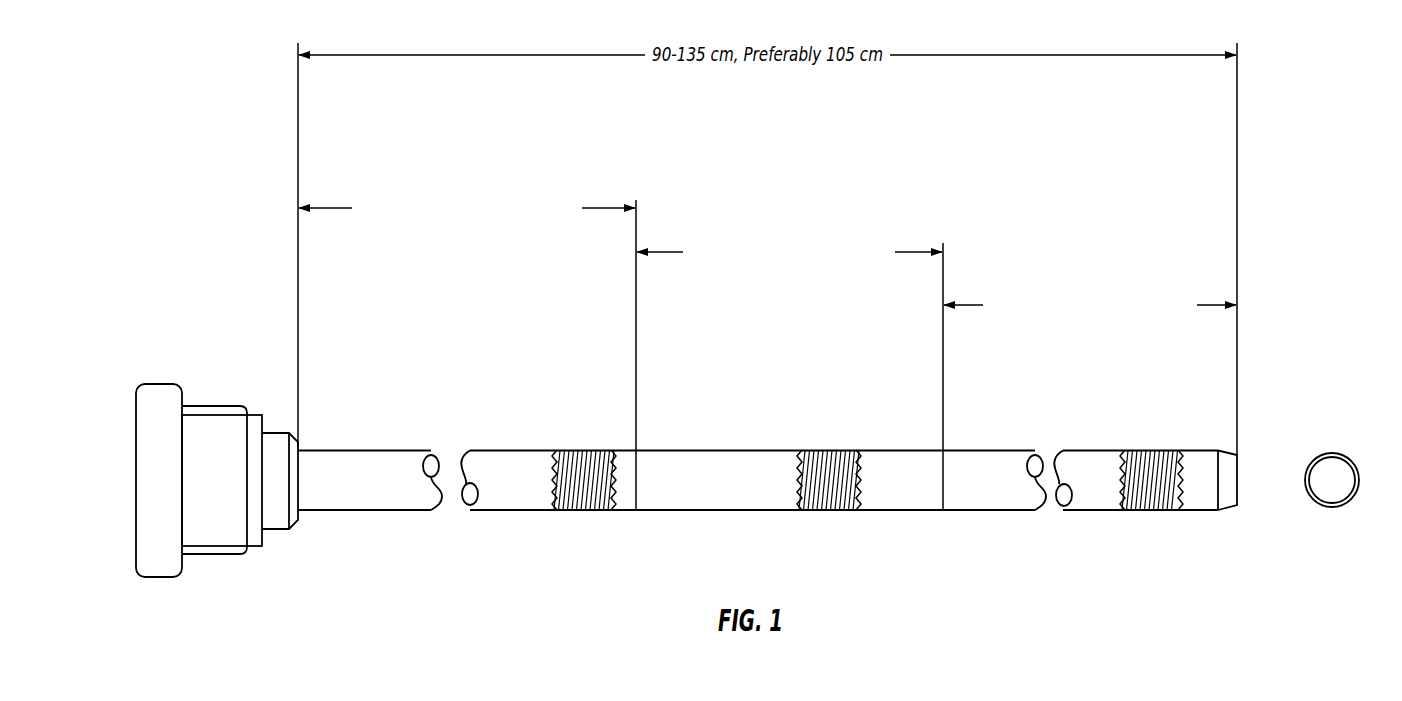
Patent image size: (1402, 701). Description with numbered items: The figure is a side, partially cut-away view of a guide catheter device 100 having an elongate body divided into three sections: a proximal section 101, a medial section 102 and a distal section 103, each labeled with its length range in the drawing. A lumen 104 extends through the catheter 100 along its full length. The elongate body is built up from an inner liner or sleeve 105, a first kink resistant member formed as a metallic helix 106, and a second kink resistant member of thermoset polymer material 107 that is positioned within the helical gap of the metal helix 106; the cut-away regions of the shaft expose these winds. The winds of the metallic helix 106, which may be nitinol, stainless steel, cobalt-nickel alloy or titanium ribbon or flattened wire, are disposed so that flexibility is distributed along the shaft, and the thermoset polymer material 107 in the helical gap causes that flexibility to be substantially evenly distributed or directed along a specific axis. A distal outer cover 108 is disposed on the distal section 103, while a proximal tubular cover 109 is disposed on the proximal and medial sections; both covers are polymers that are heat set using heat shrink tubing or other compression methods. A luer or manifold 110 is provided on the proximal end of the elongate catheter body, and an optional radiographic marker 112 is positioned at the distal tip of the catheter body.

The guide catheter device 100 is at (1237, 480).
The proximal section 101 is at (540, 167).
The medial section 102 is at (853, 213).
The distal section 103 is at (1148, 267).
The lumen 104 is at (466, 494).
The inner liner or sleeve 105 is at (435, 466).
The metallic helix 106 is at (570, 505).
The thermoset polymer material 107 is at (558, 508).
The distal outer cover 108 is at (668, 457).
The proximal tubular cover 109 is at (982, 458).
The luer or manifold 110 is at (225, 527).
The radiographic marker 112 is at (1210, 498).